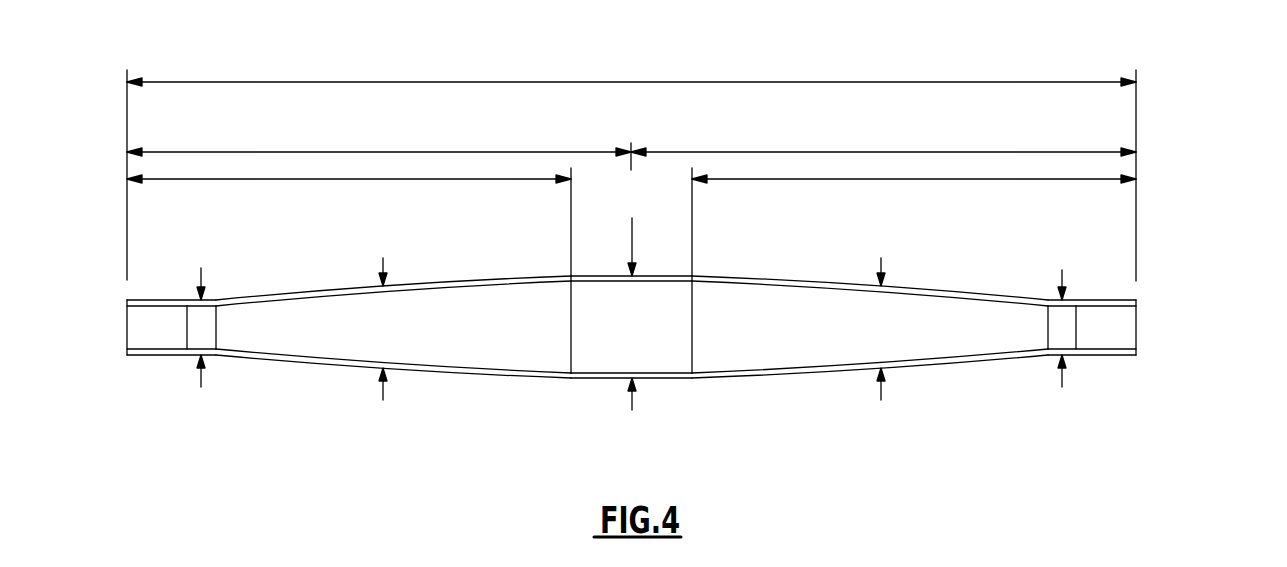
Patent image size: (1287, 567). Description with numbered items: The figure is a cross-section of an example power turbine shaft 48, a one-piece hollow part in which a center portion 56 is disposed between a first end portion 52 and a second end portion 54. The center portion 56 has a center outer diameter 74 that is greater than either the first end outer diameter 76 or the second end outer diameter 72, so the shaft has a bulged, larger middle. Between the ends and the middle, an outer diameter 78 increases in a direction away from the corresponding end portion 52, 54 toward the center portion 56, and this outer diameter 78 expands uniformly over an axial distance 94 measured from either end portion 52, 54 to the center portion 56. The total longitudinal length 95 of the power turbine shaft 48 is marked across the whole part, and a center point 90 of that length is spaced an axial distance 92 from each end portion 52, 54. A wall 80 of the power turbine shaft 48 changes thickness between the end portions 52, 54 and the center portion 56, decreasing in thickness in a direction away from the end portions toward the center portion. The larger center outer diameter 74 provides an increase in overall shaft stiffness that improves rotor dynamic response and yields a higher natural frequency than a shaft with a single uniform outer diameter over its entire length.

The power turbine shaft 48 is at (702, 344).
The first end portion 52 is at (218, 390).
The second end portion 54 is at (1044, 391).
The center portion 56 is at (567, 422).
The second end outer diameter 72 is at (1062, 277).
The center outer diameter 74 is at (632, 243).
The first end outer diameter 76 is at (201, 277).
The outer diameter 78 is at (383, 263).
The wall 80 is at (470, 319).
The center point 90 is at (633, 147).
The axial distance 92 is at (360, 152).
The axial distance 94 is at (364, 180).
The total longitudinal length 95 is at (835, 82).